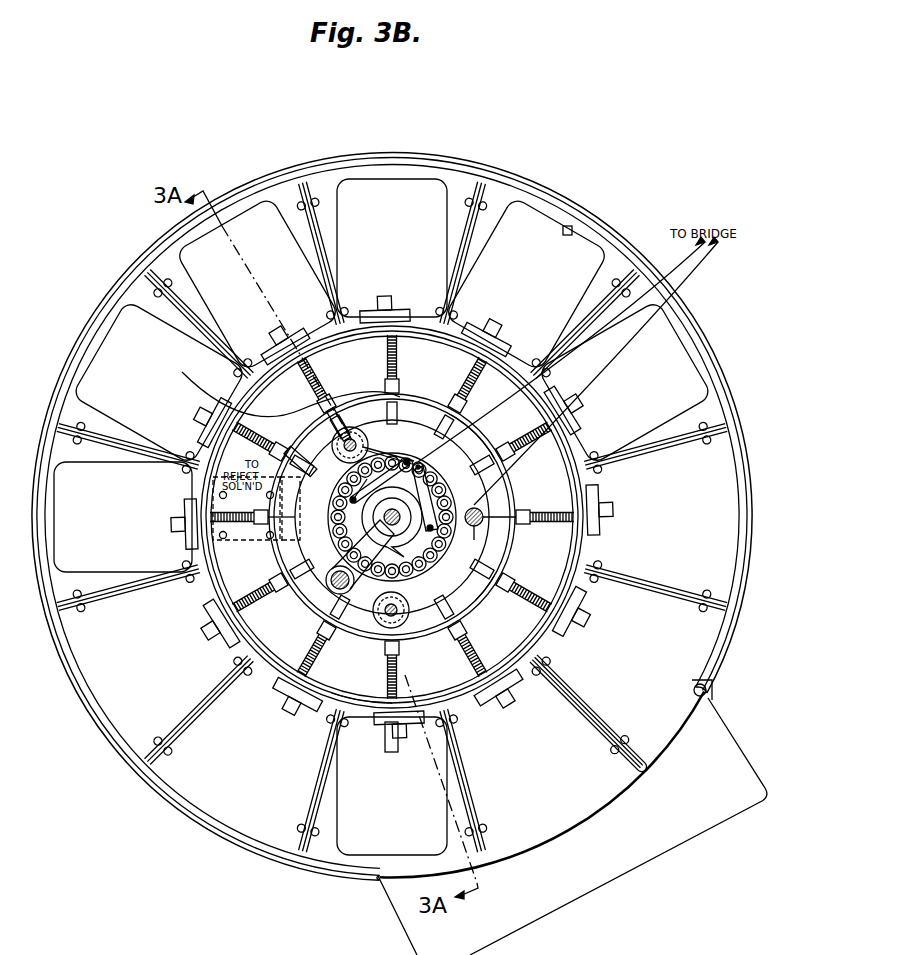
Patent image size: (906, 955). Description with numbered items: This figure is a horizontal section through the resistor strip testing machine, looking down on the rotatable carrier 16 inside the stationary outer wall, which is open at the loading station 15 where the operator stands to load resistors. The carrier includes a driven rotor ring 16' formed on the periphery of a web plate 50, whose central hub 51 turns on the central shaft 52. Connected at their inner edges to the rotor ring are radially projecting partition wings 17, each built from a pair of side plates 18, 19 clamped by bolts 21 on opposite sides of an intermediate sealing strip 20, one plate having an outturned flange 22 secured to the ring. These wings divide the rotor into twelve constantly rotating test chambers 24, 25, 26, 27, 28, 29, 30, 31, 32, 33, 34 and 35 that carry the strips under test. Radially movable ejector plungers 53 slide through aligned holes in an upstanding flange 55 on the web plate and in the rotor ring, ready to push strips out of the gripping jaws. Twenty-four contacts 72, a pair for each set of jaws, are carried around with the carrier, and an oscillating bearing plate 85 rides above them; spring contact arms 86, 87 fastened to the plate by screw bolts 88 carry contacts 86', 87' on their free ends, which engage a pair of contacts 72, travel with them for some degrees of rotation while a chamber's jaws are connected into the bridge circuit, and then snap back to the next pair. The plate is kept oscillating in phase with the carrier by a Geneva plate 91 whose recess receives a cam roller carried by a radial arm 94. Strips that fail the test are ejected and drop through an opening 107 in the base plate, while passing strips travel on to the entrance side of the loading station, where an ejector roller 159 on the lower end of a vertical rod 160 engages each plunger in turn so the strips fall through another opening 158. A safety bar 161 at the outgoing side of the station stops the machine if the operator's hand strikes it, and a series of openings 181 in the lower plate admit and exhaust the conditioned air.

The loading station opening 15 is at (612, 876).
The rotatable carrier 16 is at (392, 517).
The rotor ring 16' is at (432, 659).
The partition wing 17 is at (579, 697).
The side plate 18 is at (589, 708).
The side plate 19 is at (580, 712).
The sealing strip 20 is at (586, 708).
The bolt 21 is at (628, 738).
The outturned flange 22 is at (520, 667).
The test chamber 24 is at (541, 776).
The test chamber 25 is at (656, 660).
The test chamber 26 is at (686, 526).
The test chamber 27 is at (669, 400).
The test chamber 28 is at (551, 283).
The test chamber 29 is at (406, 240).
The test chamber 30 is at (261, 250).
The test chamber 31 is at (154, 376).
The test chamber 32 is at (118, 466).
The test chamber 33 is at (151, 663).
The test chamber 34 is at (258, 763).
The test chamber 35 is at (409, 876).
The web plate 50 is at (440, 370).
The central hub 51 is at (474, 428).
The central shaft 52 is at (380, 522).
The ejector plunger 53 is at (385, 742).
The upstanding flange 55 is at (477, 599).
The contact 72 is at (440, 558).
The bearing plate 85 is at (380, 510).
The spring contact arm 86 is at (441, 492).
The contact 86' is at (435, 454).
The spring contact arm 87 is at (360, 445).
The contact 87' is at (398, 434).
The screw bolt 88 is at (476, 508).
The Geneva plate 91 is at (400, 543).
The arm 94 is at (352, 588).
The opening 107 is at (122, 505).
The opening 158 is at (338, 797).
The ejector roller 159 is at (430, 598).
The rod 160 is at (385, 615).
The safety bar 161 is at (693, 688).
The opening 181 is at (570, 227).